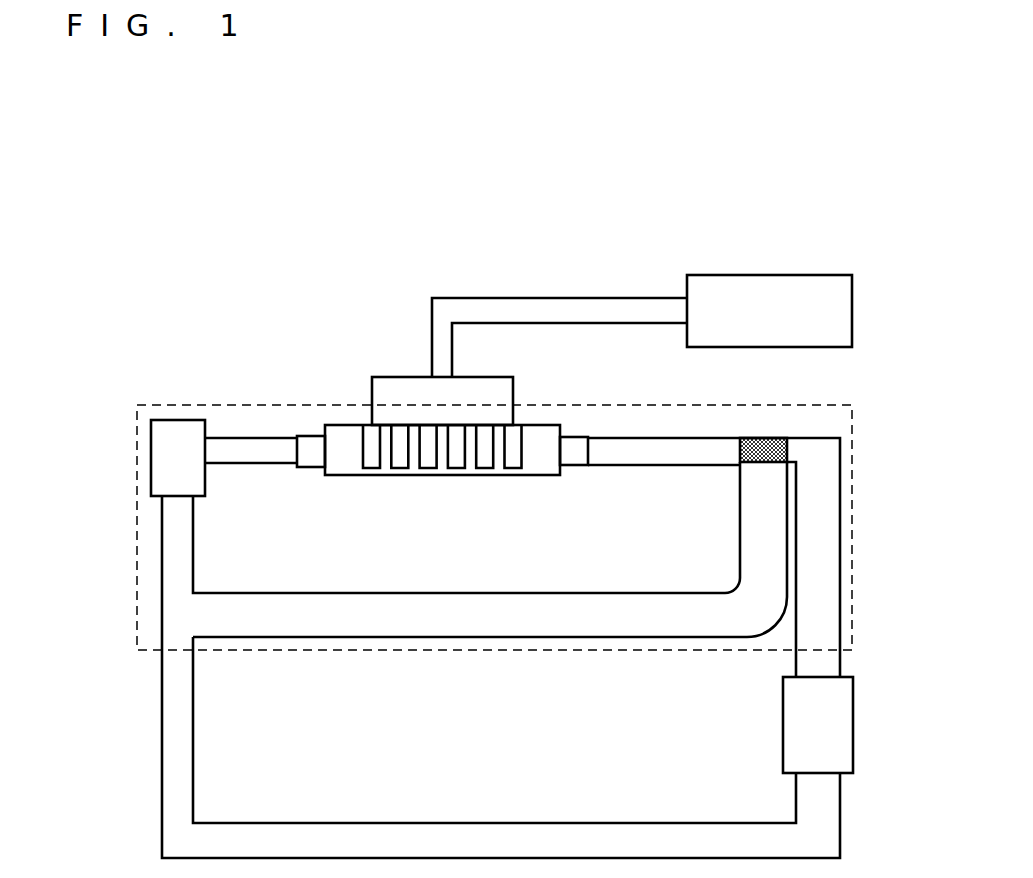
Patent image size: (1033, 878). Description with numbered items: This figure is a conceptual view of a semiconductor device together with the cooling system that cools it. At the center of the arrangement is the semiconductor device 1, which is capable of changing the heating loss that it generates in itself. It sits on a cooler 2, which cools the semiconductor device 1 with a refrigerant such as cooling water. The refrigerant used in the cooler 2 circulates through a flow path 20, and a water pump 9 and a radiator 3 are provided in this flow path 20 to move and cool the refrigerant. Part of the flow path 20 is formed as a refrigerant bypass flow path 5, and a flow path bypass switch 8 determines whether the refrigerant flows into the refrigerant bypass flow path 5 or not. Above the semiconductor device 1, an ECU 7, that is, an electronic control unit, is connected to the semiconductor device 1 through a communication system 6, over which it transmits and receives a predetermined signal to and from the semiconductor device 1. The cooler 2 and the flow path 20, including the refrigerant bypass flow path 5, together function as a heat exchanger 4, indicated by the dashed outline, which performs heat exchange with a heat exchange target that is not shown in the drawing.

The semiconductor device 1 is at (388, 388).
The cooler 2 is at (486, 470).
The radiator 3 is at (833, 725).
The heat exchanger 4 is at (493, 652).
The refrigerant bypass flow path 5 is at (752, 526).
The communication system 6 is at (558, 313).
The ECU 7 is at (772, 288).
The flow path bypass switch 8 is at (763, 437).
The water pump 9 is at (175, 415).
The flow path 20 is at (822, 832).